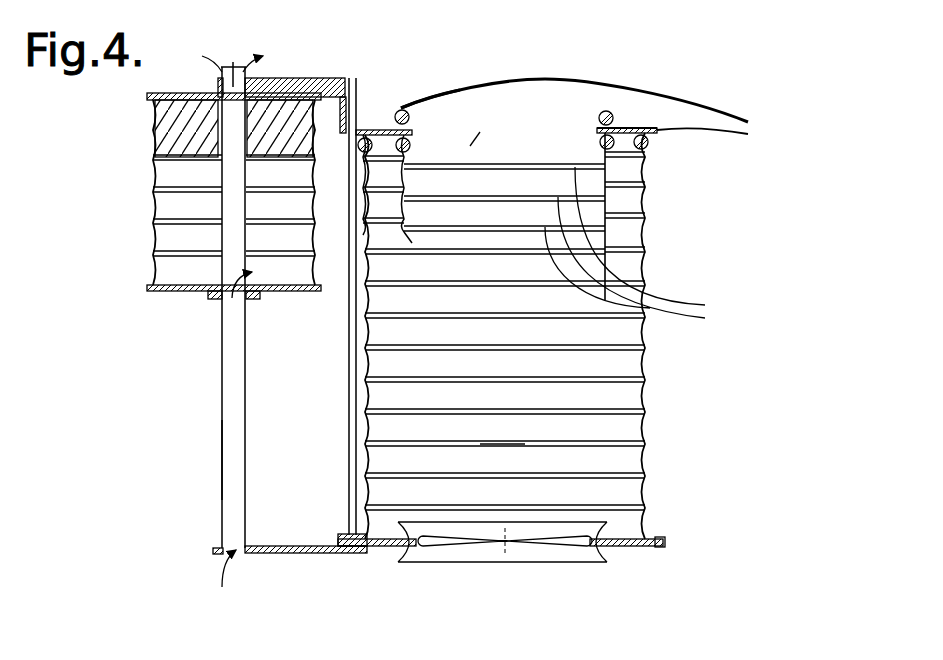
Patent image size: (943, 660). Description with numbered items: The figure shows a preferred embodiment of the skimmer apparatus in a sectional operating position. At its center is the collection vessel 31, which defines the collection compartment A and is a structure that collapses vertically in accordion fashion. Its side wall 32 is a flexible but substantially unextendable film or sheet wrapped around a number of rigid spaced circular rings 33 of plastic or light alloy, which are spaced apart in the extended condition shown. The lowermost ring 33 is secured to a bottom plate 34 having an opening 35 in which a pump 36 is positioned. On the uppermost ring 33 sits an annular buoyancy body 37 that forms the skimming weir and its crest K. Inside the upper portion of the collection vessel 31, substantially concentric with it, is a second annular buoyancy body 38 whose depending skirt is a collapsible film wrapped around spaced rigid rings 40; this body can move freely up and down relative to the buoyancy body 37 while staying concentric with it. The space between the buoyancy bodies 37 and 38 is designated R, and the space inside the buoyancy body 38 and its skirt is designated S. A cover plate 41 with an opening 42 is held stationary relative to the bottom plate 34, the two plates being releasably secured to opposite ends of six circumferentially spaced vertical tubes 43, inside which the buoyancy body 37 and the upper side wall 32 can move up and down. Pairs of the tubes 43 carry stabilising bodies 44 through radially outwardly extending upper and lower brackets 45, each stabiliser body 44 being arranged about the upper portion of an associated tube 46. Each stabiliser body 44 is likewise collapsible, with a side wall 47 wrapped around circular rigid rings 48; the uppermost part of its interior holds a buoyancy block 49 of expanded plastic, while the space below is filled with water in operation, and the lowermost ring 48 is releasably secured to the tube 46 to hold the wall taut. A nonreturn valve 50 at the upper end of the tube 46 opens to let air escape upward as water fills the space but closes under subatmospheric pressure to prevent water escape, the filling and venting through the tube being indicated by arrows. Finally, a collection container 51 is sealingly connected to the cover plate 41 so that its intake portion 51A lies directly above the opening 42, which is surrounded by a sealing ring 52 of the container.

The collection vessel 31 is at (651, 388).
The side wall 32 is at (646, 427).
The rigid spaced circular rings 33 is at (647, 535).
The bottom plate 34 is at (665, 545).
The opening 35 is at (594, 548).
The pump 36 is at (578, 548).
The annular buoyancy body 37 is at (648, 155).
The second annular buoyancy body 38 is at (599, 139).
The spaced rigid rings 40 is at (651, 249).
The cover plate 41 is at (659, 132).
The opening 42 is at (599, 114).
The vertical tubes 43 is at (348, 367).
The stabilising body 44 is at (148, 204).
The brackets 45 is at (297, 554).
The tube 46 is at (226, 460).
The side wall 47 is at (153, 273).
The circular rigid rings 48 is at (152, 258).
The buoyancy block 49 is at (170, 142).
The nonreturn valve 50 is at (237, 65).
The collection container 51 is at (514, 76).
The intake portion 51A is at (430, 97).
The sealing ring 52 is at (401, 107).
The space between buoyancy bodies R is at (645, 136).
The crest K is at (640, 130).
The space inside second buoyancy body S is at (484, 120).
The collection compartment A is at (502, 430).